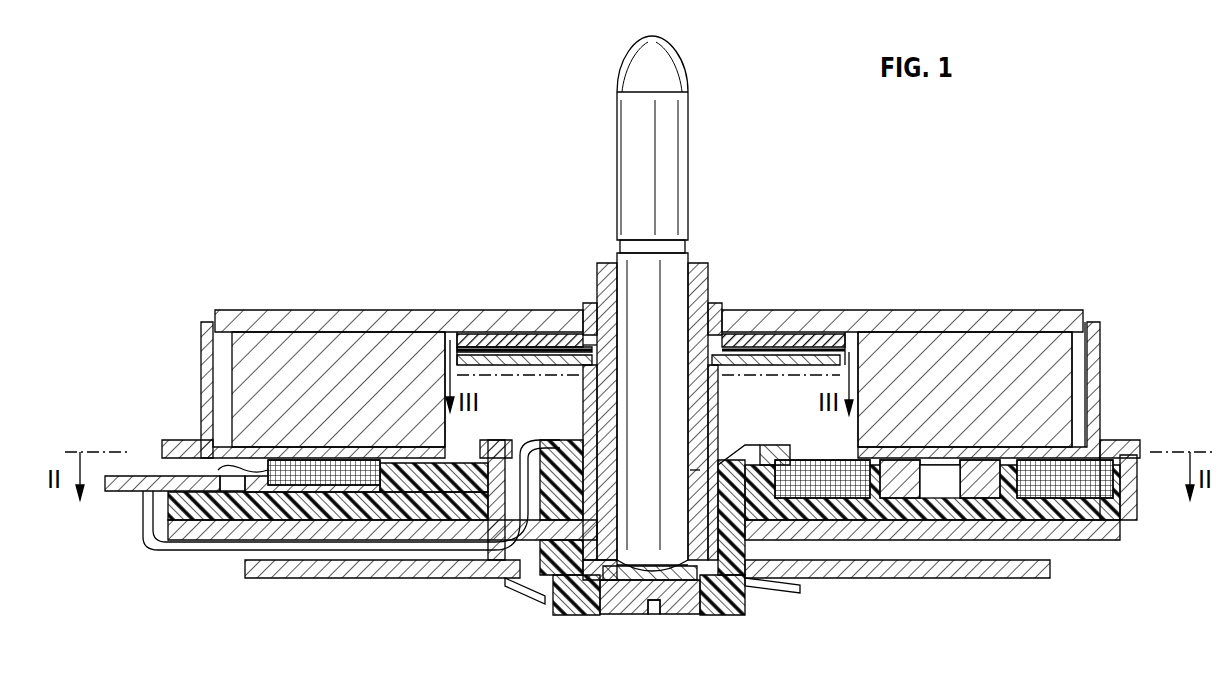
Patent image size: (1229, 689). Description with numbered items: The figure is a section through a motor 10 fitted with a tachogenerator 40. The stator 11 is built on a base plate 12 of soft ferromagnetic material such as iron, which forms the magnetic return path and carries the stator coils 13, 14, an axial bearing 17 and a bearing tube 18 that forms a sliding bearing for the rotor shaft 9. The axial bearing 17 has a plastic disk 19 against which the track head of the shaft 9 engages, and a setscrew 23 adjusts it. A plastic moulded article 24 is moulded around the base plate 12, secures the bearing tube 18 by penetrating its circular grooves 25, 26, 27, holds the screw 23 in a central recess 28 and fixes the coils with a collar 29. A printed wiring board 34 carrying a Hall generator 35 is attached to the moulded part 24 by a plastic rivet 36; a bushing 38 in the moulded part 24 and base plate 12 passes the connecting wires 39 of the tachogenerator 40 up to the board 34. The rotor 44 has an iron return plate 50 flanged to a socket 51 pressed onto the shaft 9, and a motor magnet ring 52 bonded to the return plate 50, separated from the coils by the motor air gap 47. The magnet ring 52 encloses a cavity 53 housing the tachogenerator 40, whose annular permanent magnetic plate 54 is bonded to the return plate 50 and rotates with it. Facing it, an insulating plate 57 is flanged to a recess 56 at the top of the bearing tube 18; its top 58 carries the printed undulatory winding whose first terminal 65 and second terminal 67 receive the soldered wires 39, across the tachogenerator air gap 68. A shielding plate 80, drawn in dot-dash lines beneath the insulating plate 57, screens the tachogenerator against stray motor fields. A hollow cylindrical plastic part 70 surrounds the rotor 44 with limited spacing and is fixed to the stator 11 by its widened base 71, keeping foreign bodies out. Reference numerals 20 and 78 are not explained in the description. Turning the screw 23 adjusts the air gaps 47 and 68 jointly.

The rotor shaft 9 is at (651, 381).
The motor 10 is at (1140, 315).
The stator 11 is at (1160, 470).
The base plate 12 is at (442, 540).
The stator coil 13 is at (250, 458).
The stator coil 14 is at (1110, 440).
The axial bearing 17 is at (580, 630).
The bearing tube 18 is at (738, 348).
The plastic disk 19 is at (690, 616).
The cartridge base 20 is at (650, 565).
The setscrew 23 is at (658, 616).
The plastic moulded article 24 is at (420, 500).
The circular groove 25 is at (740, 465).
The circular groove 26 is at (688, 492).
The circular groove 27 is at (742, 592).
The central recess 28 is at (628, 617).
The collar 29 is at (785, 465).
The printed wiring board 34 is at (120, 478).
The Hall generator 35 is at (330, 460).
The plastic rivet 36 is at (190, 445).
The bushing 38 is at (535, 582).
The connecting wires 39 is at (505, 555).
The tachogenerator 40 is at (498, 325).
The rotor 44 is at (1074, 365).
The motor air gap 47 is at (402, 462).
The return plate 50 is at (300, 318).
The socket 51 is at (706, 280).
The motor magnet ring 52 is at (354, 402).
The cavity 53 is at (762, 412).
The permanent magnetic plate 54 is at (530, 355).
The recess 56 is at (605, 360).
The insulating plate 57 is at (800, 365).
The top of insulating plate 58 is at (793, 345).
The first terminal 65 is at (570, 350).
The second terminal 67 is at (585, 348).
The tachogenerator air gap 68 is at (520, 340).
The hollow cylindrical plastic part 70 is at (205, 362).
The widened base 71 is at (1120, 460).
The pin 78 is at (790, 590).
The shielding plate 80 is at (530, 380).